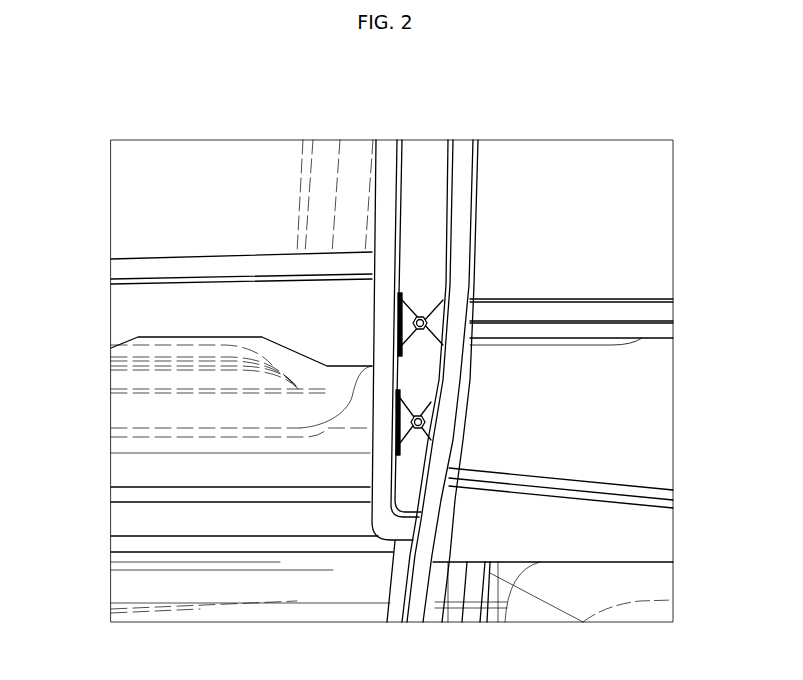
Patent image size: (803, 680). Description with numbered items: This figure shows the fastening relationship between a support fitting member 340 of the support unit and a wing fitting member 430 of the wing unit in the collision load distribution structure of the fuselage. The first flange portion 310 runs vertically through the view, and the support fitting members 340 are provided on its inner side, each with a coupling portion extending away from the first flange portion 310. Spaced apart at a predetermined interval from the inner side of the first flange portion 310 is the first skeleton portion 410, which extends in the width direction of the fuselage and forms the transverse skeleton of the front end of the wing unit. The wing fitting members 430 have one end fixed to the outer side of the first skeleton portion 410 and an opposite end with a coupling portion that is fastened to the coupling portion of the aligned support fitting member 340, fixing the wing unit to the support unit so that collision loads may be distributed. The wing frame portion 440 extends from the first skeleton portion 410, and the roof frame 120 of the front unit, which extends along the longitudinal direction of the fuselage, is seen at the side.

The roof frame 120 is at (157, 323).
The first flange portion 310 is at (378, 473).
The support fitting member 340 is at (407, 412).
The first skeleton portion 410 is at (463, 158).
The wing fitting member 430 is at (428, 325).
The wing frame portion 440 is at (638, 312).